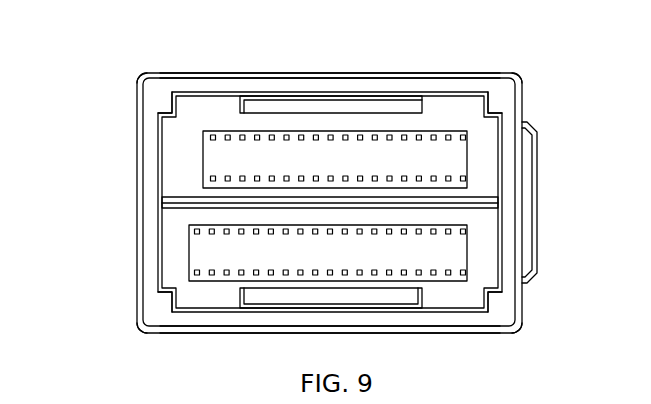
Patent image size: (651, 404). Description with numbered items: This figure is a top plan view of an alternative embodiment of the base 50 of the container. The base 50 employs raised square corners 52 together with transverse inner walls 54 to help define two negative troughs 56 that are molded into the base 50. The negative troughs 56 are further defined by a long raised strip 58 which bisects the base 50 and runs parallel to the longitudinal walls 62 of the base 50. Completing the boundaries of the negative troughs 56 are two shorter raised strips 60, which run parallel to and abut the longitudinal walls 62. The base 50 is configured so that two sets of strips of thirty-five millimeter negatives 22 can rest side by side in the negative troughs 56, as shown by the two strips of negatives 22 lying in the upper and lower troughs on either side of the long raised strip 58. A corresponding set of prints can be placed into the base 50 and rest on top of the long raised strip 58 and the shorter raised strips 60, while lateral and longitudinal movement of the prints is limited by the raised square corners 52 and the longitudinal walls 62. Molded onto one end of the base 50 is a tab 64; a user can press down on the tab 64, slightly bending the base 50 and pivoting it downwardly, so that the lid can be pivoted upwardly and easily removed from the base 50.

The strips of 35 millimeter negatives 22 is at (330, 155).
The base 50 is at (109, 208).
The raised square corners 52 is at (153, 86).
The transverse inner walls 54 is at (163, 168).
The negative troughs 56 is at (182, 158).
The long raised strip 58 is at (450, 206).
The shorter raised strips 60 is at (277, 107).
The longitudinal walls 62 is at (305, 73).
The tab 64 is at (537, 207).